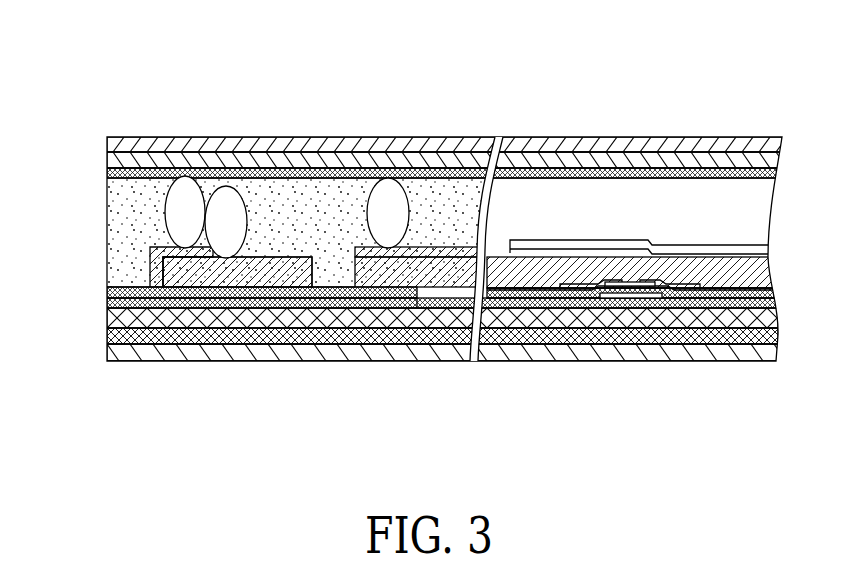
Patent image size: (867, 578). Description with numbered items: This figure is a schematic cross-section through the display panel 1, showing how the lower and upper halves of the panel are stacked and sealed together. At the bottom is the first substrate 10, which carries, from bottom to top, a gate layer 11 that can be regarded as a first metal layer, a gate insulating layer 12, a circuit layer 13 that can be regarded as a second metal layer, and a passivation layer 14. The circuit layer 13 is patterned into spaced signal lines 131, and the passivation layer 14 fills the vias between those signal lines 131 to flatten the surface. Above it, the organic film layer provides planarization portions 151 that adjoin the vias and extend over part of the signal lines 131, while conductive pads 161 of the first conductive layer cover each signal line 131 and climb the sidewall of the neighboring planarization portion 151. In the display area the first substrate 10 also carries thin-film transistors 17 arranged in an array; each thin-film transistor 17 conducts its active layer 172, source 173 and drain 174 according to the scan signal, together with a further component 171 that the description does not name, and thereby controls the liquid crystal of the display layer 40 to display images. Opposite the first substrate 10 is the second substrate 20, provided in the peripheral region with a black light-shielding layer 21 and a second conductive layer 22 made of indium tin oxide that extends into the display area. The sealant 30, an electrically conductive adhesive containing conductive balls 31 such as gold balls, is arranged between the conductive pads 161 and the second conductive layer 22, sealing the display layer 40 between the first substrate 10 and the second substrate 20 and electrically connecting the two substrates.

The display panel 1 is at (146, 78).
The first substrate 10 is at (107, 348).
The gate layer 11 is at (107, 325).
The gate insulating layer 12 is at (107, 305).
The circuit layer 13 is at (385, 410).
The signal lines 131 is at (152, 363).
The passivation layer 14 is at (212, 363).
The planarization portion 151 is at (150, 252).
The conductive pads 161 is at (107, 290).
The thin-film transistors 17 is at (632, 365).
The gate electrode 171 is at (650, 363).
The active layer 172 is at (618, 363).
The source 173 is at (580, 363).
The drain 174 is at (678, 341).
The second substrate 20 is at (107, 139).
The black light-shielding layer 21 is at (107, 160).
The second conductive layer 22 is at (107, 173).
The sealant 30 is at (107, 212).
The conductive balls 31 is at (410, 195).
The display layer 40 is at (701, 136).